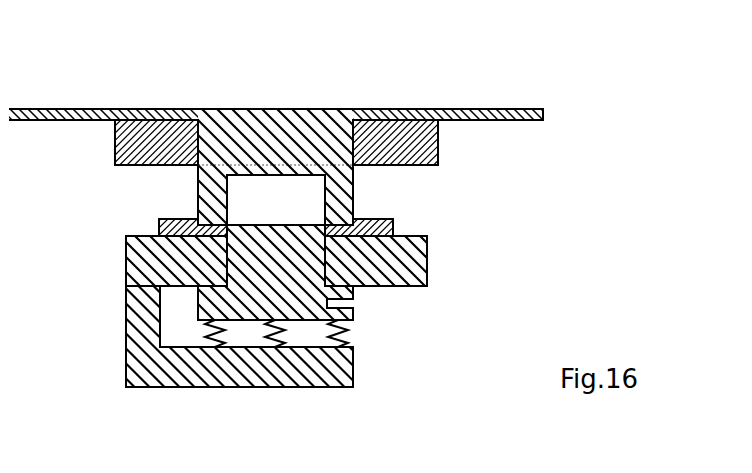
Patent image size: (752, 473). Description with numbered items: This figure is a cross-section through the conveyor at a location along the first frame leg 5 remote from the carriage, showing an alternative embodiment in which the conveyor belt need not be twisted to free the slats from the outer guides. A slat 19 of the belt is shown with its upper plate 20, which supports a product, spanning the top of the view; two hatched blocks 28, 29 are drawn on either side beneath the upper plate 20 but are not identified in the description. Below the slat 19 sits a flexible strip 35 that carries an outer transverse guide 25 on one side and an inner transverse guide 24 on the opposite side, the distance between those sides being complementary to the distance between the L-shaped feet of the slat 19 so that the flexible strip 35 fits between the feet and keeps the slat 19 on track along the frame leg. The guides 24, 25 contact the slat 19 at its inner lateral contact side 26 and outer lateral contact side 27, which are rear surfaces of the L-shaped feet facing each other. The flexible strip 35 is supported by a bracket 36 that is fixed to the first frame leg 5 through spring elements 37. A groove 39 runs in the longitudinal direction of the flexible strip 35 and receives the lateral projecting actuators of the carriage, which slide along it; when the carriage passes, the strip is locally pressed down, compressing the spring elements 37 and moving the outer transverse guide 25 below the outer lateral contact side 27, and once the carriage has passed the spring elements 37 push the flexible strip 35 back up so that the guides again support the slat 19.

The first frame leg 5 is at (145, 255).
The slat 19 is at (271, 124).
The upper plate 20 is at (462, 112).
The inner transverse guide 24 is at (327, 228).
The outer transverse guide 25 is at (226, 228).
The inner lateral contact side 26 is at (325, 200).
The outer lateral contact side 27 is at (227, 225).
The right block 28 is at (392, 128).
The left block 29 is at (157, 128).
The flexible strip 35 is at (305, 272).
The bracket 36 is at (135, 361).
The spring element 37 is at (340, 340).
The groove 39 is at (340, 303).